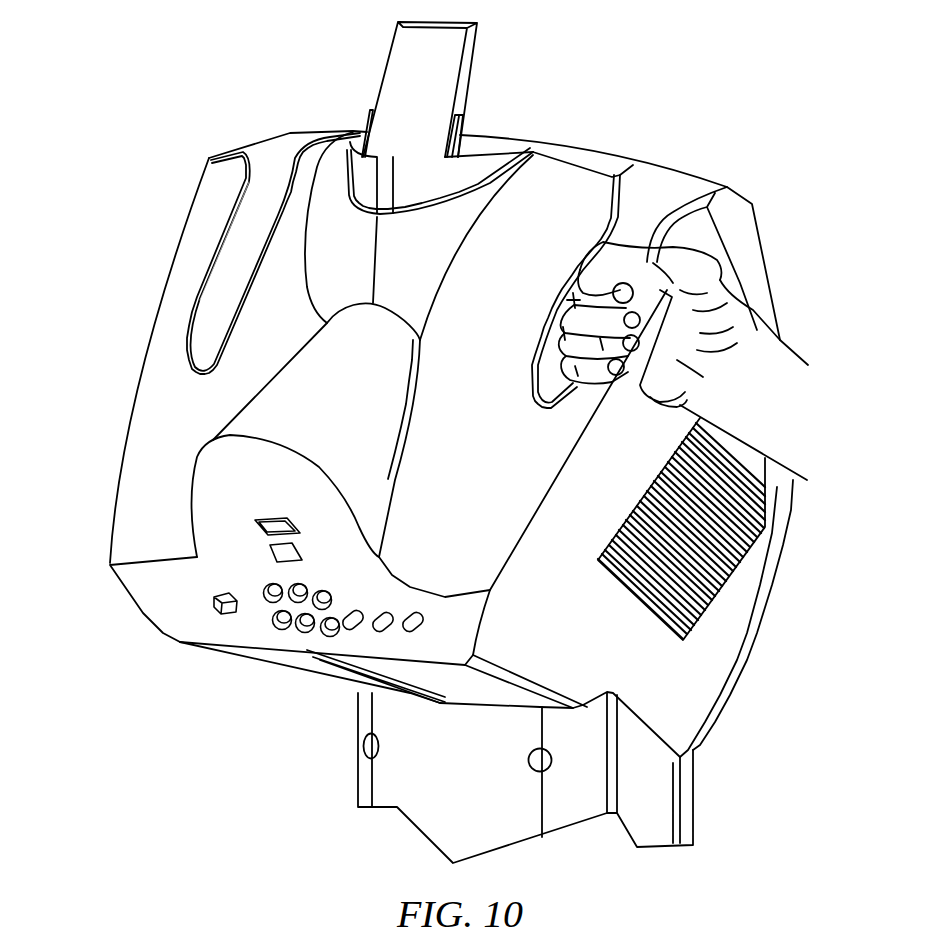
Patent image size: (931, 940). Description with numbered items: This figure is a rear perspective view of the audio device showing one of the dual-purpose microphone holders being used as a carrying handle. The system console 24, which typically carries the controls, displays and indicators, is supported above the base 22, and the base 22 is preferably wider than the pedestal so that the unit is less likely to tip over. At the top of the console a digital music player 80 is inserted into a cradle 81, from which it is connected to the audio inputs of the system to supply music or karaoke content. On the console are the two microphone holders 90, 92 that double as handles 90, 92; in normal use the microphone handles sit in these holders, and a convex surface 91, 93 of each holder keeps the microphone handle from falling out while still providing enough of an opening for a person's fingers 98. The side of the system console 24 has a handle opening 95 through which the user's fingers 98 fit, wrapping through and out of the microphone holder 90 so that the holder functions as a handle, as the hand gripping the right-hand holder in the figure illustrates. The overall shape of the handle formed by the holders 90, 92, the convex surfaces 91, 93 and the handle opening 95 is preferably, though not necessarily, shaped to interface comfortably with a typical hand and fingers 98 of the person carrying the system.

The base 22 is at (438, 813).
The system console 24 is at (148, 457).
The digital music player 80 is at (470, 55).
The cradle 81 is at (468, 122).
The microphone holder 90 is at (547, 375).
The convex surface 91 is at (652, 227).
The microphone holder 92 is at (223, 285).
The convex surface 93 is at (253, 173).
The handle opening 95 is at (663, 393).
The fingers 98 is at (573, 300).